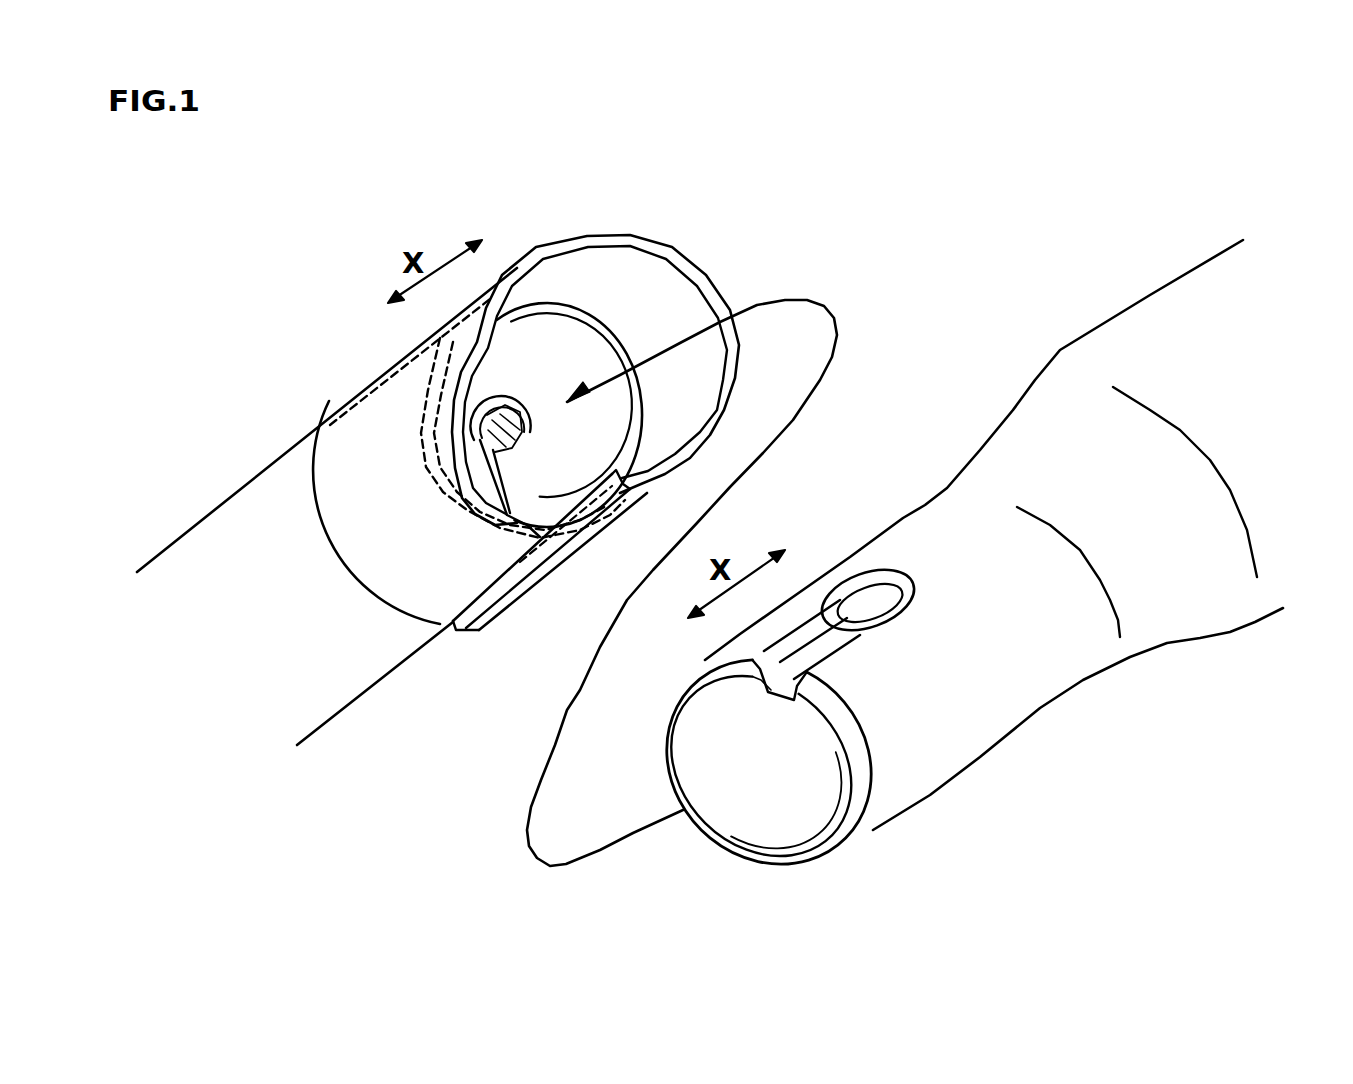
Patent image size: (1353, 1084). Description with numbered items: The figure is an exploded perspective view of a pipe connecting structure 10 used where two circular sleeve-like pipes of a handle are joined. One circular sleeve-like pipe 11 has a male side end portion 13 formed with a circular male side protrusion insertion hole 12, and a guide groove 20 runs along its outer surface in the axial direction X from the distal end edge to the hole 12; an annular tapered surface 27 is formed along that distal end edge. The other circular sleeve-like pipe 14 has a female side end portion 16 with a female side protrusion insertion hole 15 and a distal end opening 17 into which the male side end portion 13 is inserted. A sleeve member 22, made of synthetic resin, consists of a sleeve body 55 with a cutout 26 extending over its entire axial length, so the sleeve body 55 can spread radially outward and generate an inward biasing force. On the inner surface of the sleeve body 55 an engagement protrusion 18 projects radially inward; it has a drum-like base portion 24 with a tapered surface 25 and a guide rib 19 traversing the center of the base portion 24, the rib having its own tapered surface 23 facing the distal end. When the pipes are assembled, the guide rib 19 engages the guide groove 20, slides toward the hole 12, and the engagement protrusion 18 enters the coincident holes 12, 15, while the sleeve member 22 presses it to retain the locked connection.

The pipe connecting structure 10 is at (1044, 168).
The circular sleeve-like pipe 11 is at (994, 490).
The male side protrusion insertion hole 12 is at (868, 535).
The male side end portion 13 is at (970, 789).
The circular sleeve-like pipe 14 is at (313, 506).
The female side protrusion insertion hole 15 is at (430, 377).
The female side end portion 16 is at (580, 358).
The distal end opening 17 is at (695, 531).
The engagement protrusion 18 is at (305, 361).
The guide rib 19 is at (550, 564).
The guide groove 20 is at (812, 576).
The sleeve member 22 is at (376, 664).
The tapered surface 23 is at (571, 334).
The base portion 24 is at (347, 354).
The tapered surface 25 is at (354, 468).
The cutout 26 is at (464, 691).
The annular tapered surface 27 is at (775, 800).
The sleeve body 55 is at (353, 520).